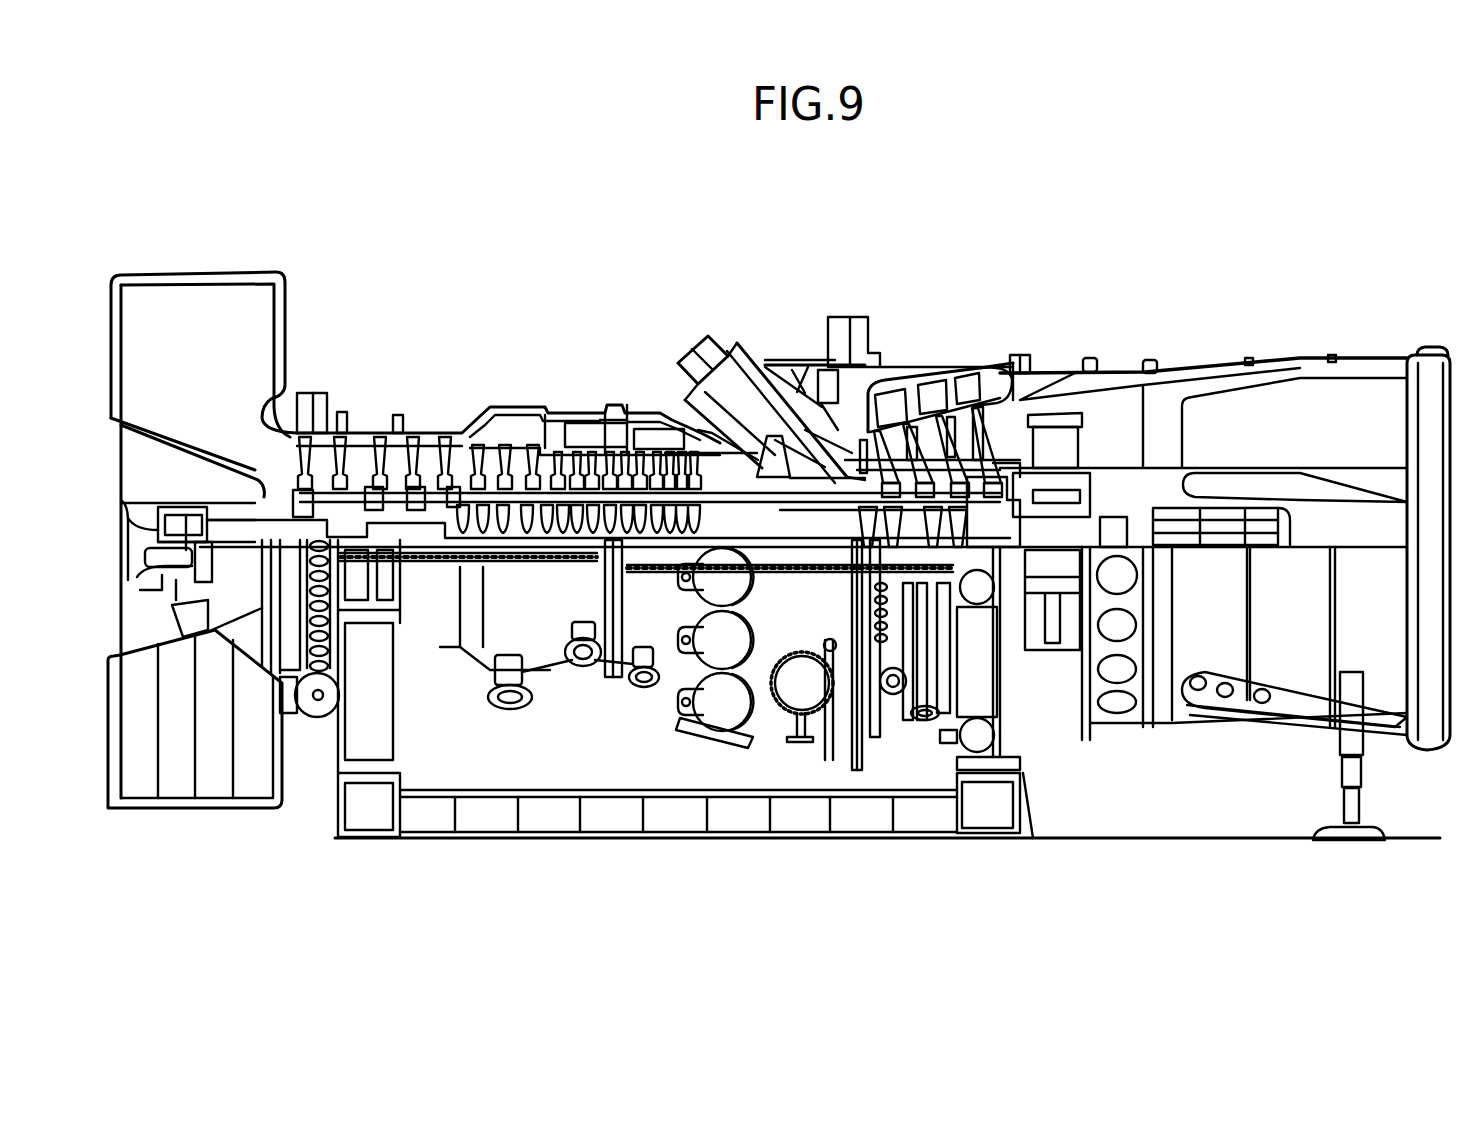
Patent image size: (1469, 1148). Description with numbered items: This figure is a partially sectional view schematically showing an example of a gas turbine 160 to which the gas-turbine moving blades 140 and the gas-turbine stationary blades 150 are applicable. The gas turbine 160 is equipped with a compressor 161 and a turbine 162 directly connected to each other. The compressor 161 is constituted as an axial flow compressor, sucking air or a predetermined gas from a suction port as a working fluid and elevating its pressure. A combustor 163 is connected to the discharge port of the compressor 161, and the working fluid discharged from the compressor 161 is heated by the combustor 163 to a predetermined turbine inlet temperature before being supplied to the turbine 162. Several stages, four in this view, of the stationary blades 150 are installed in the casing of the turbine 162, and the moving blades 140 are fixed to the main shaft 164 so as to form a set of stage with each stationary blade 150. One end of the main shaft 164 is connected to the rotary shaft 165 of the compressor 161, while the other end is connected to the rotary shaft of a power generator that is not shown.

The gas-turbine moving blade 140 is at (963, 432).
The gas-turbine stationary blade 150 is at (896, 375).
The gas turbine 160 is at (962, 260).
The compressor 161 is at (457, 425).
The turbine 162 is at (962, 372).
The combustor 163 is at (770, 372).
The main shaft 164 is at (987, 553).
The rotary shaft 165 is at (392, 540).